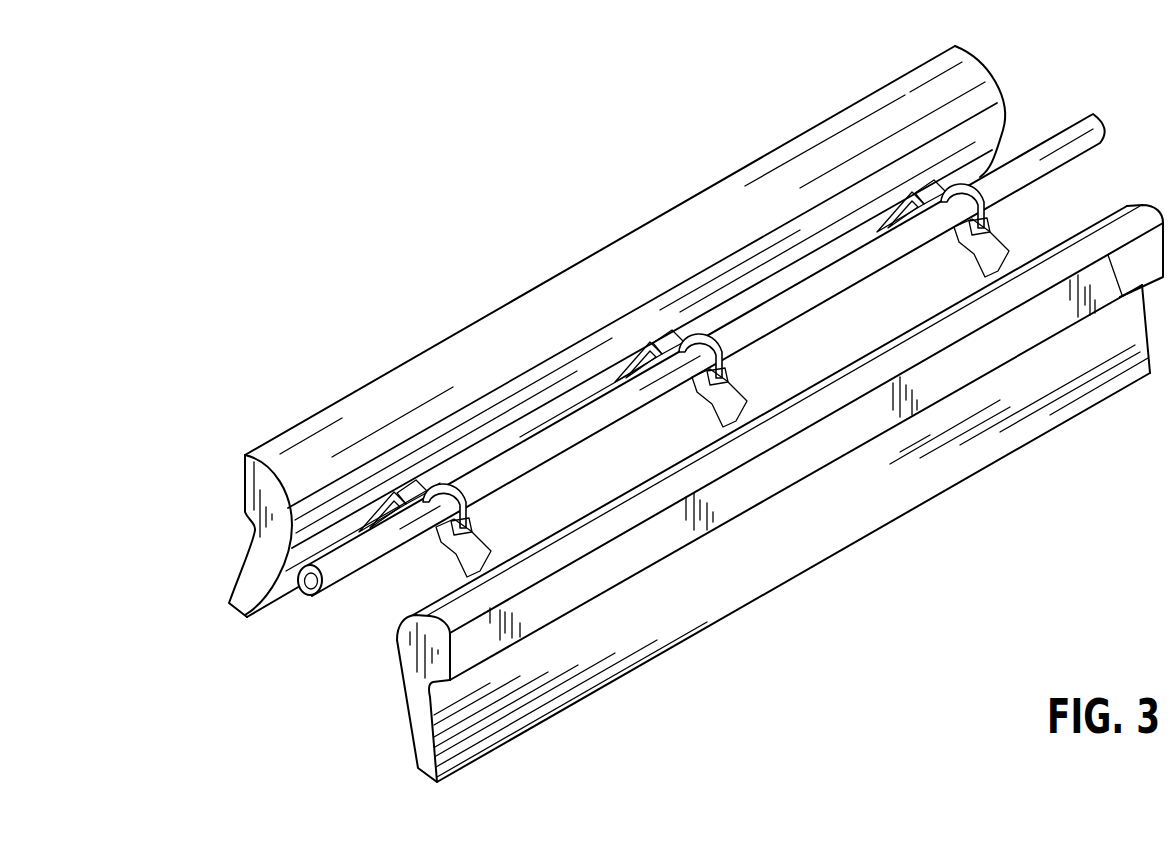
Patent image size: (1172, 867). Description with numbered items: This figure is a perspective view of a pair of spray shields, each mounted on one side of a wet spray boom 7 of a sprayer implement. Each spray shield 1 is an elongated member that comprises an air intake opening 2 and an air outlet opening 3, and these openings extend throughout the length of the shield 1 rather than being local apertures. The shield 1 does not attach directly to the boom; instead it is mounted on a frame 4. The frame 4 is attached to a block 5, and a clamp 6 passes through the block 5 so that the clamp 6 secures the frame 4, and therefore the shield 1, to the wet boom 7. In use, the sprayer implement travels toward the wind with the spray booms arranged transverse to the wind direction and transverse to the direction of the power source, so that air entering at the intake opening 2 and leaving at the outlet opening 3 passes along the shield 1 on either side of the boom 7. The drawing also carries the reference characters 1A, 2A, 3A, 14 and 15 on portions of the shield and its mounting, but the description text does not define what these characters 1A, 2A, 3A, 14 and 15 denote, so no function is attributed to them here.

The spray shield 1 is at (1037, 418).
The trough reflector 1A is at (655, 240).
The air intake opening 2 is at (822, 450).
The upper edge of trough 2A is at (244, 484).
The air outlet opening 3 is at (416, 774).
The lower lip of trough 3A is at (235, 618).
The frame 4 is at (984, 262).
The block 5 is at (963, 247).
The clamp 6 is at (980, 192).
The wet spray boom 7 is at (1112, 124).
The rounded end portion 14 is at (407, 654).
The lower face 15 is at (709, 606).